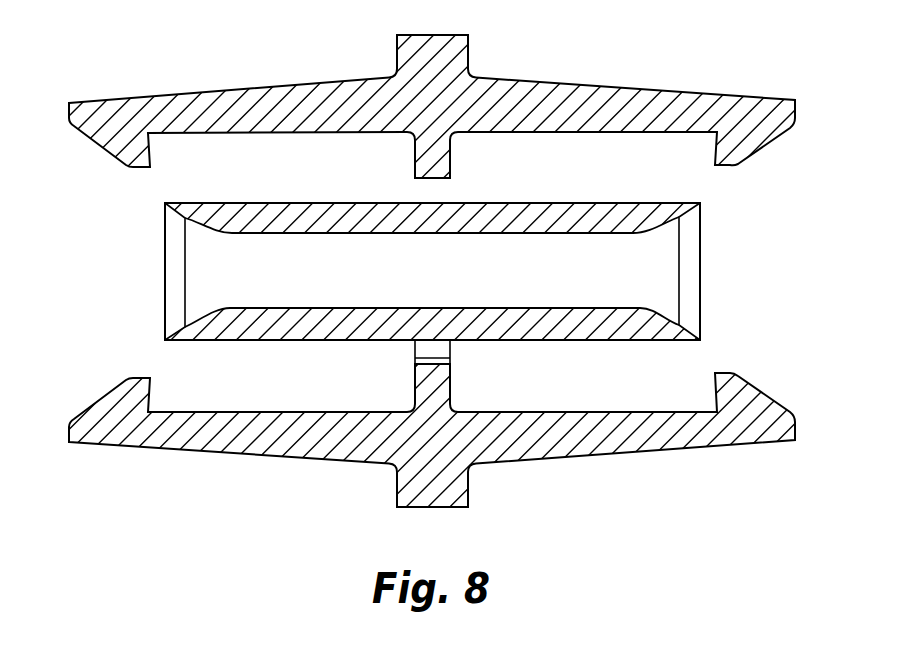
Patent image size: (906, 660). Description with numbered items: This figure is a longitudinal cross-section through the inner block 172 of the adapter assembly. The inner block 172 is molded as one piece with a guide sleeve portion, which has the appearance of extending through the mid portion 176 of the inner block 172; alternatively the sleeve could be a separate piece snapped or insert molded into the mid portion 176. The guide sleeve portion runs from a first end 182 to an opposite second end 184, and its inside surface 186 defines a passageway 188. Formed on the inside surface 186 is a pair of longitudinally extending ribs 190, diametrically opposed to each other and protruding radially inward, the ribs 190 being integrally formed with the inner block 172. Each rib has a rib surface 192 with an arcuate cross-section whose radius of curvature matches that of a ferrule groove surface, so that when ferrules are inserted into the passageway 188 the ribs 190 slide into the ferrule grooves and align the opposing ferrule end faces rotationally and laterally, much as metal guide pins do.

The inner block 172 is at (455, 56).
The mid portion 176 is at (438, 383).
The first end 182 is at (186, 334).
The second end 184 is at (670, 343).
The inside surface 186 is at (668, 218).
The passageway 188 is at (633, 270).
The ribs 190 is at (315, 308).
The rib surface 192 is at (463, 232).